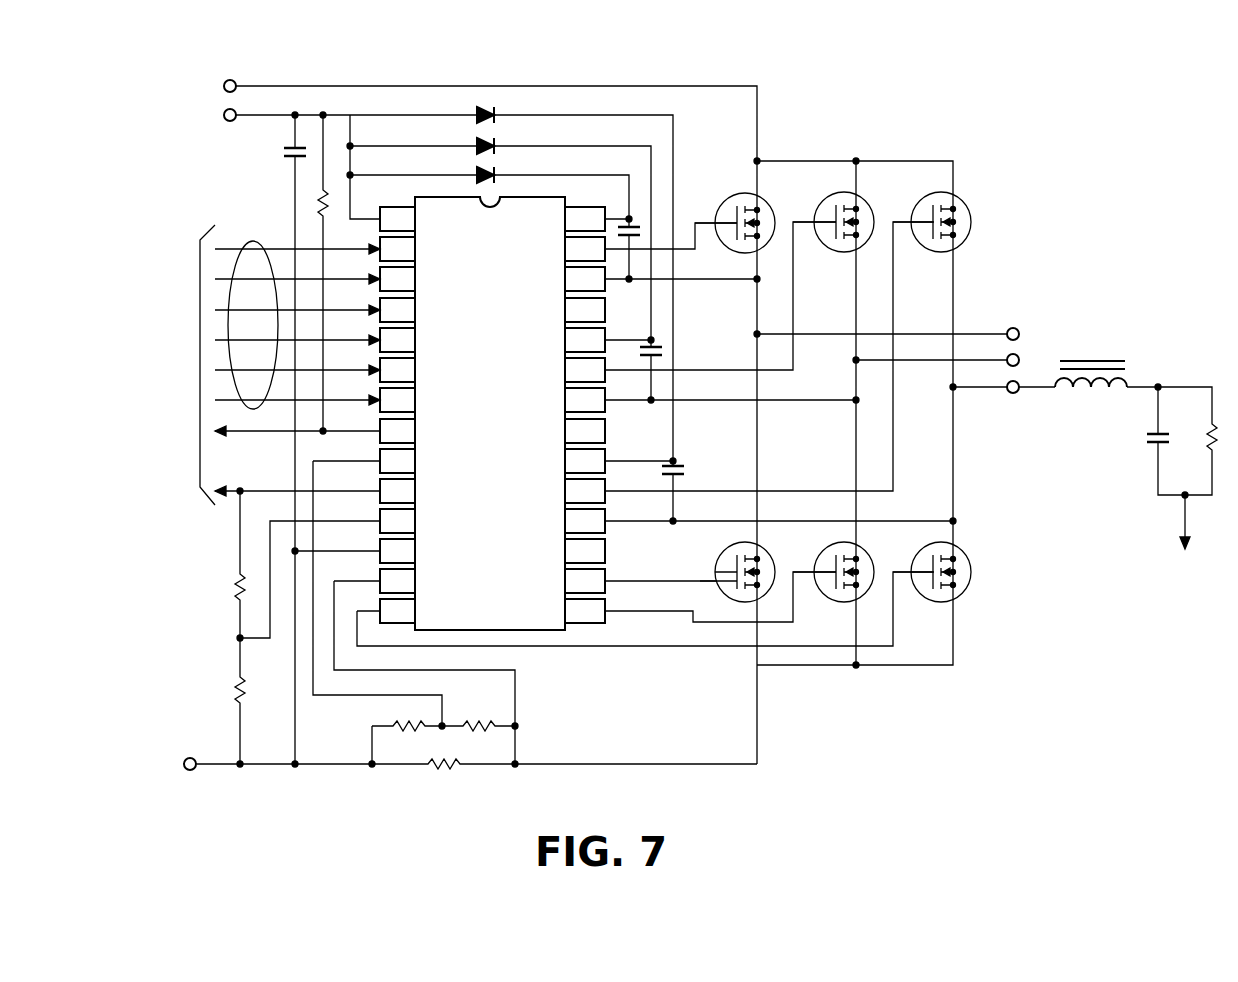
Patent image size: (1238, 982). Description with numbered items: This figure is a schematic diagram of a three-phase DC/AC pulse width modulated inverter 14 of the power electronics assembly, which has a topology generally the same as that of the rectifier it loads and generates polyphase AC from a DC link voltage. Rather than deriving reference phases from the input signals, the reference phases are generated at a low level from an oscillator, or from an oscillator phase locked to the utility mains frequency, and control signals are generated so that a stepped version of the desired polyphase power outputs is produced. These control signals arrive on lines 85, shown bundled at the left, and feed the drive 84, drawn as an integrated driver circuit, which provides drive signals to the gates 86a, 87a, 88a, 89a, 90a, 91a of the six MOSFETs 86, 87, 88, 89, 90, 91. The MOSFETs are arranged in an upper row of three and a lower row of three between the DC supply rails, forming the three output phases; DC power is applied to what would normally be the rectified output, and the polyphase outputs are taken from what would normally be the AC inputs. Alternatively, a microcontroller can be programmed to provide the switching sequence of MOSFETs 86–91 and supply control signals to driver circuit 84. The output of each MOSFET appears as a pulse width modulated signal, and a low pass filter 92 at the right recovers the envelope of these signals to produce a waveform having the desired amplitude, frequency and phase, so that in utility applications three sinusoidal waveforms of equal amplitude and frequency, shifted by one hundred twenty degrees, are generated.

The inverter 14 is at (996, 101).
The drive 84 is at (548, 612).
The lines 85 is at (253, 240).
The MOSFET 86 is at (764, 203).
The MOSFET 87 is at (862, 202).
The MOSFET 88 is at (962, 202).
The MOSFET 89 is at (764, 553).
The MOSFET 90 is at (866, 560).
The MOSFET 91 is at (968, 553).
The gate 86a is at (745, 252).
The gate 87a is at (822, 230).
The gate 88a is at (920, 230).
The gate 89a is at (716, 556).
The gate 90a is at (820, 590).
The gate 91a is at (914, 596).
The low pass filter 92 is at (1124, 345).